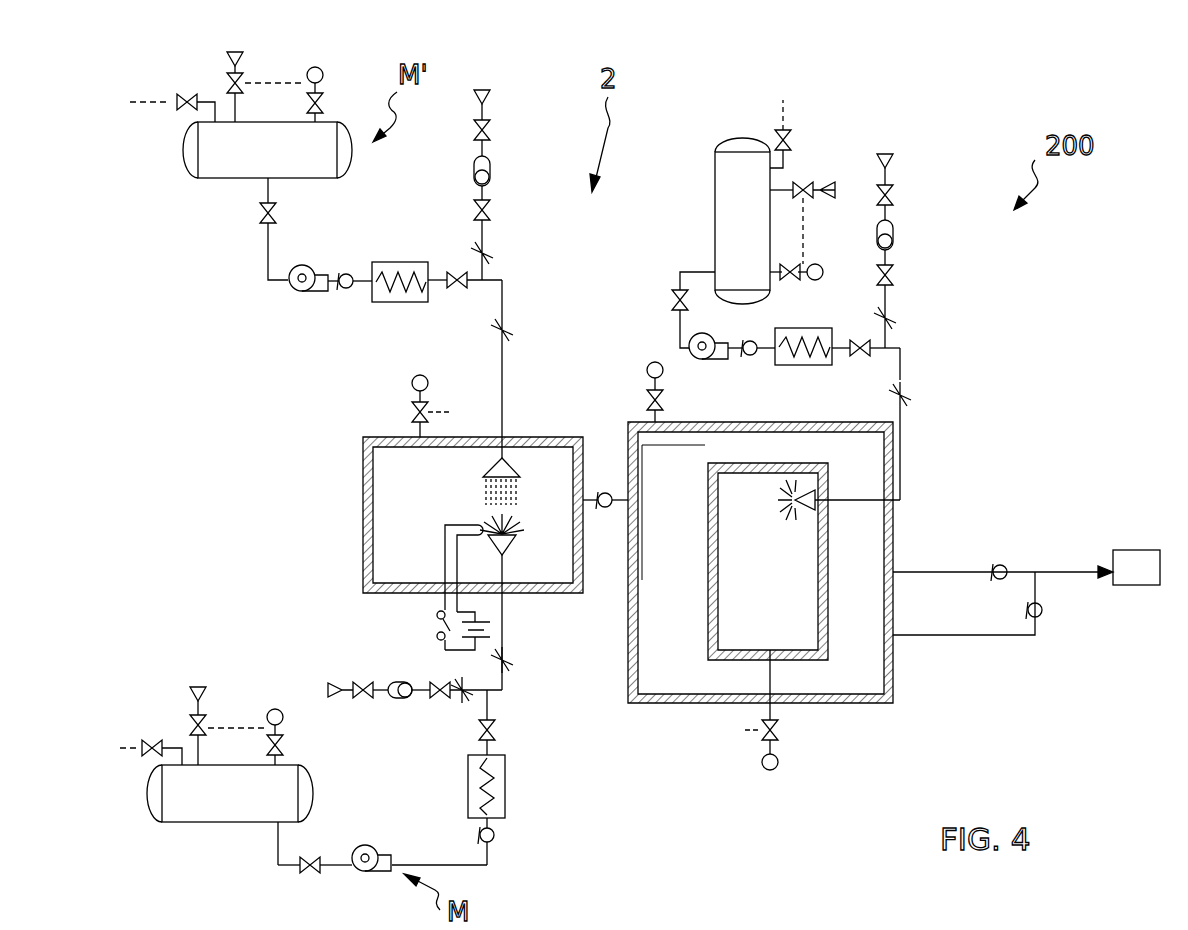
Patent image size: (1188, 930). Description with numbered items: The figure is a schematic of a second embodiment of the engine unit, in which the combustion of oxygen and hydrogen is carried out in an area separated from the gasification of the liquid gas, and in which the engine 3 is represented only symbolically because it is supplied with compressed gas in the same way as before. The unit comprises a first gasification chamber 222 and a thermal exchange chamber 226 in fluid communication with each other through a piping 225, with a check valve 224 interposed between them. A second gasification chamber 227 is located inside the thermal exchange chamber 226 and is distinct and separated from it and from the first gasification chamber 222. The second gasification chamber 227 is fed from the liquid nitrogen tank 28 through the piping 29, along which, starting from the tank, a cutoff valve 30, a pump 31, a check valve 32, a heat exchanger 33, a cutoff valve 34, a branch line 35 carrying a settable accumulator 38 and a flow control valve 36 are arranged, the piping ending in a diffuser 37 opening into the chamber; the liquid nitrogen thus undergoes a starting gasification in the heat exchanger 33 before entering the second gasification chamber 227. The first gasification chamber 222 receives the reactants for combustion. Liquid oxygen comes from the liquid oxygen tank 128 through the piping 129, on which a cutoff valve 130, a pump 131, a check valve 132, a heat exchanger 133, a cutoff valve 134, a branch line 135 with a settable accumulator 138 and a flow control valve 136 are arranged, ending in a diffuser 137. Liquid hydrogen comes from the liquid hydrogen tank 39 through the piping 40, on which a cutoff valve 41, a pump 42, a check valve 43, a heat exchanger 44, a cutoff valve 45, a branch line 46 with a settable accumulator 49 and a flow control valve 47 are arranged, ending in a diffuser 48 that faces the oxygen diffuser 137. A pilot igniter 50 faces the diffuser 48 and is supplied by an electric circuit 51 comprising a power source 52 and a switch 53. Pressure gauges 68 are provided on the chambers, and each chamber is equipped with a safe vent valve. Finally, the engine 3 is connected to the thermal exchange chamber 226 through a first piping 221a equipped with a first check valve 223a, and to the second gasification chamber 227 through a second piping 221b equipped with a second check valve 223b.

The engine 3 is at (1137, 562).
The liquid nitrogen tank 28 is at (720, 170).
The piping 29 is at (905, 360).
The cutoff valve 30 is at (676, 299).
The pump 31 is at (710, 362).
The check valve 32 is at (750, 358).
The heat exchanger 33 is at (806, 365).
The cutoff valve 34 is at (858, 358).
The branch line 35 is at (895, 325).
The flow control valve 36 is at (912, 397).
The diffuser 37 is at (806, 506).
The settable accumulator 38 is at (895, 237).
The liquid hydrogen tank 39 is at (212, 800).
The piping 40 is at (430, 865).
The cutoff valve 41 is at (318, 860).
The pump 42 is at (368, 845).
The check valve 43 is at (498, 840).
The heat exchanger 44 is at (507, 778).
The cutoff valve 45 is at (495, 728).
The branch line 46 is at (466, 697).
The flow control valve 47 is at (512, 664).
The diffuser 48 is at (514, 548).
The settable accumulator 49 is at (405, 698).
The pilot igniter 50 is at (478, 522).
The electric circuit 51 is at (446, 650).
The power source 52 is at (490, 625).
The switch 53 is at (437, 626).
The pressure gauge 68 is at (412, 383).
The liquid oxygen tank 128 is at (220, 166).
The piping 129 is at (506, 410).
The cutoff valve 130 is at (265, 222).
The pump 131 is at (300, 294).
The check valve 132 is at (346, 289).
The heat exchanger 133 is at (402, 304).
The cutoff valve 134 is at (456, 289).
The branch line 135 is at (487, 265).
The flow control valve 136 is at (508, 332).
The diffuser 137 is at (496, 468).
The settable accumulator 138 is at (492, 176).
The first piping 221a is at (955, 637).
The second piping 221b is at (938, 570).
The first gasification chamber 222 is at (447, 492).
The first check valve 223a is at (1042, 615).
The second check valve 223b is at (1008, 564).
The check valve 224 is at (605, 490).
The piping 225 is at (604, 510).
The thermal exchange chamber 226 is at (700, 673).
The second gasification chamber 227 is at (798, 617).